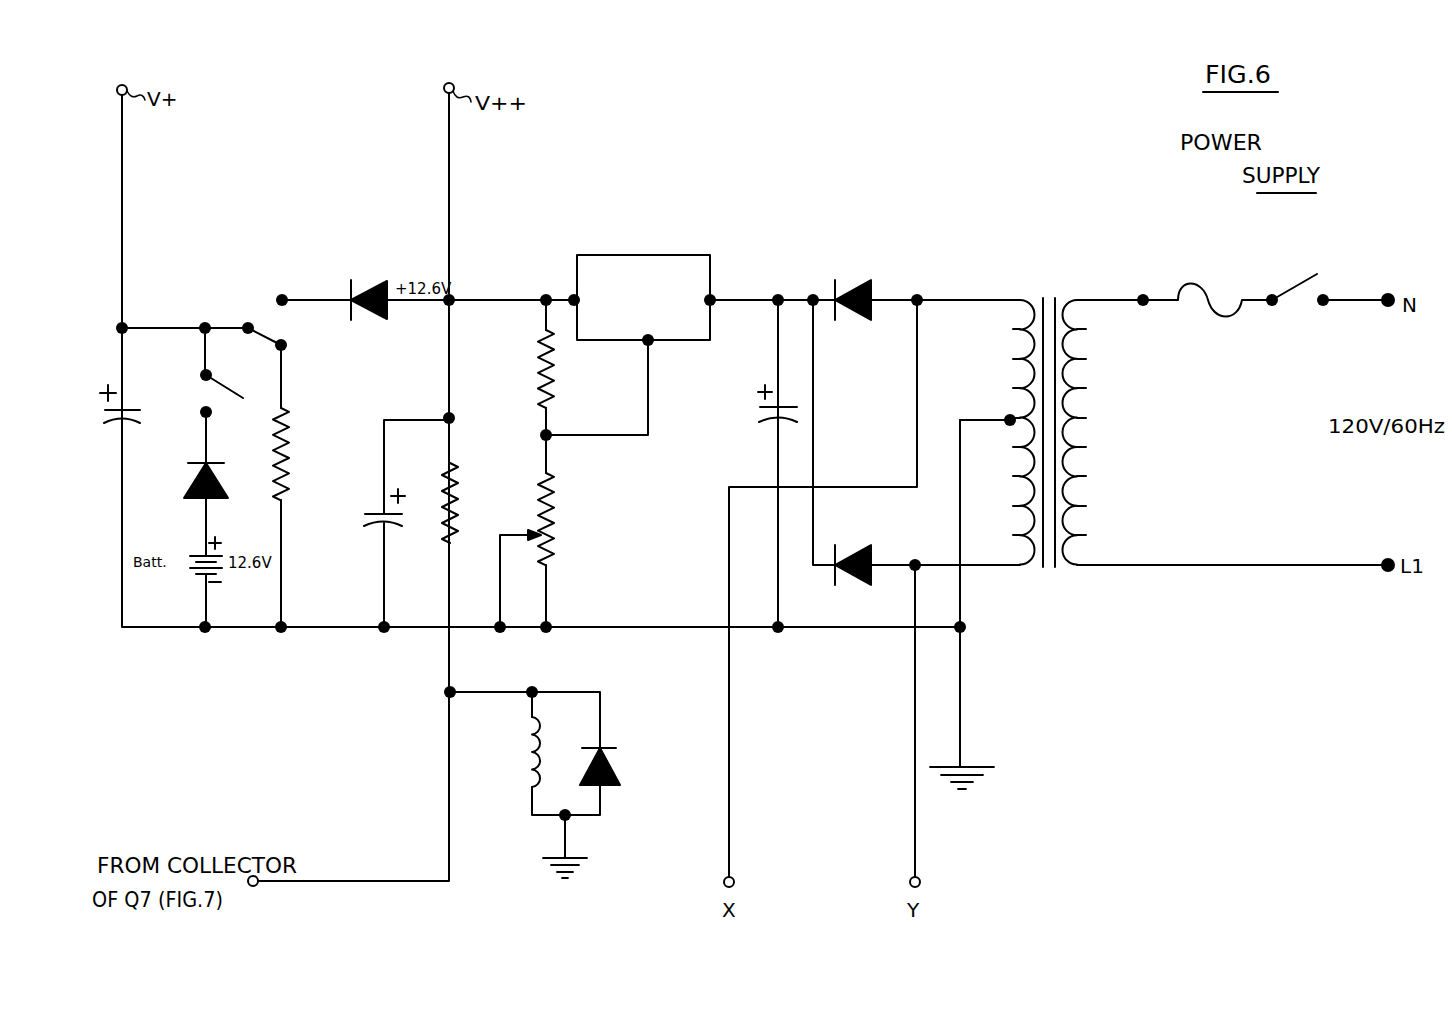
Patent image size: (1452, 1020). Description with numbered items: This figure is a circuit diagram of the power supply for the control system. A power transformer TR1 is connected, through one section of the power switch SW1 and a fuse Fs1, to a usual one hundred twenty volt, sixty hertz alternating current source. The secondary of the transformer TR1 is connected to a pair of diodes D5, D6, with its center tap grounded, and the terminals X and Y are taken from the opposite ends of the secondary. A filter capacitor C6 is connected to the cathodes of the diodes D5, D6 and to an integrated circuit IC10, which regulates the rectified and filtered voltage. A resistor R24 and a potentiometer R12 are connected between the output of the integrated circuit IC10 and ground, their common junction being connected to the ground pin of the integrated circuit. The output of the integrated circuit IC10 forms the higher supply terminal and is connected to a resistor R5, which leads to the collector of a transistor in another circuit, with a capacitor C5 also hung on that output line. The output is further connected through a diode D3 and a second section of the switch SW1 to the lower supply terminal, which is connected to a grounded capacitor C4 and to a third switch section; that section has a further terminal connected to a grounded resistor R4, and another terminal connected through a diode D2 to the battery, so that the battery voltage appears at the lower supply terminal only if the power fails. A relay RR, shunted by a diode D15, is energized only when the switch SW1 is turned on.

The grounded capacitor C4 is at (123, 407).
The power switch SW1 is at (264, 315).
The diode D3 is at (361, 283).
The grounded resistor R4 is at (286, 464).
The diode D2 is at (190, 473).
The capacitor C5 is at (378, 522).
The resistor R5 is at (458, 498).
The integrated circuit IC10 is at (643, 297).
The resistor R24 is at (542, 375).
The potentiometer R12 is at (555, 504).
The filter capacitor C6 is at (762, 410).
The diode D5 is at (855, 280).
The diode D6 is at (861, 585).
The power transformer TR1 is at (1083, 263).
The fuse Fs1 is at (1243, 257).
The relay RR is at (527, 756).
The diode D15 is at (615, 766).